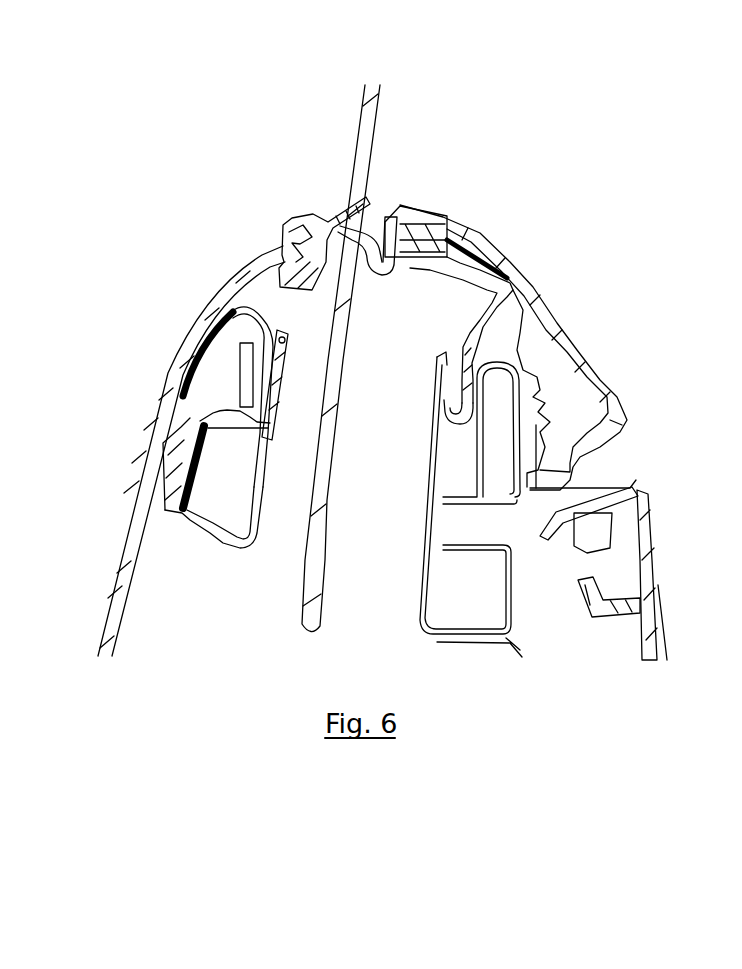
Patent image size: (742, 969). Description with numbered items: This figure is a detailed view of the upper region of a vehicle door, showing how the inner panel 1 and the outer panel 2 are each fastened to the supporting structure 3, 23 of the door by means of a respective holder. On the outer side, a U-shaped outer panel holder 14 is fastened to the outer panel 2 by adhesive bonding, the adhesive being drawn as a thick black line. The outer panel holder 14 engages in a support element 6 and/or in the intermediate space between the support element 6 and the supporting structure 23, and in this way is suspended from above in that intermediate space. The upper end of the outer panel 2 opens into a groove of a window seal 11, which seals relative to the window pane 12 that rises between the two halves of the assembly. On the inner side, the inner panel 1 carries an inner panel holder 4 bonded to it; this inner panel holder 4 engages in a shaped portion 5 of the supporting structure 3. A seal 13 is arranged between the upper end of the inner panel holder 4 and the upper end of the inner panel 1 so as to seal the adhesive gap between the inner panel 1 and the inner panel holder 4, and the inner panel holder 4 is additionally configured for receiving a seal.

The inner panel 1 is at (582, 362).
The outer panel 2 is at (122, 552).
The supporting structure 3 is at (510, 565).
The inner panel holder 4 is at (480, 325).
The shaped portion 5 is at (463, 418).
The support element 6 is at (190, 422).
The window seal 11 is at (330, 217).
The window pane 12 is at (367, 137).
The seal 13 is at (388, 245).
The outer panel holder 14 is at (253, 313).
The supporting structure 23 is at (210, 533).